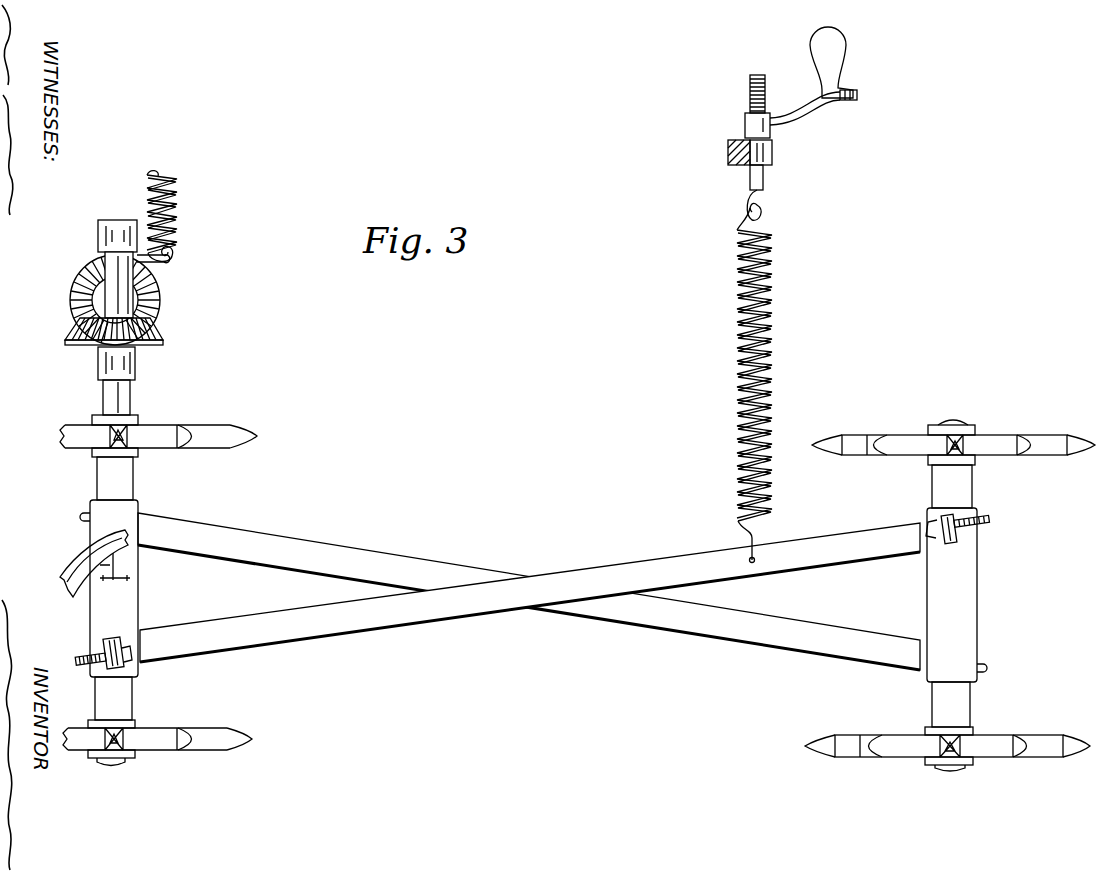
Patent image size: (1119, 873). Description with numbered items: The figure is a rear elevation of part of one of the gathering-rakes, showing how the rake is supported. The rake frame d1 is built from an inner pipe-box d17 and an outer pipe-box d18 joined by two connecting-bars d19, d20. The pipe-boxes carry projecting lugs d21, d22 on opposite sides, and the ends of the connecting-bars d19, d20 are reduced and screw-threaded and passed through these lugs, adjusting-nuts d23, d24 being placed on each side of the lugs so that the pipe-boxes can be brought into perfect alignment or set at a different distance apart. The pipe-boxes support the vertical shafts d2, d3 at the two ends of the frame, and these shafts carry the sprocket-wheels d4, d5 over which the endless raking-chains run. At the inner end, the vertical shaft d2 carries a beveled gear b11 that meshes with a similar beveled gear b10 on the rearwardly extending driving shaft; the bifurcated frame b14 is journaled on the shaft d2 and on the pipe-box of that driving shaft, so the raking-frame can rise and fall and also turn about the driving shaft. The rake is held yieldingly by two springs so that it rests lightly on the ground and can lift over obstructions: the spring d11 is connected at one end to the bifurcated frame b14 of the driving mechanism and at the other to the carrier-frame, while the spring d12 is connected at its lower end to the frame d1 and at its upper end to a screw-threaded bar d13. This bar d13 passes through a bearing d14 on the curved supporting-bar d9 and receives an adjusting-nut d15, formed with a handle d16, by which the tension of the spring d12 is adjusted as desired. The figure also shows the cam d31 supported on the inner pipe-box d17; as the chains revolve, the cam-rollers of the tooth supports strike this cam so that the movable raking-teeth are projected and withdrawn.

The spring d11 is at (177, 220).
The beveled gear b10 is at (157, 287).
The beveled gear b11 is at (153, 330).
The bifurcated frame b14 is at (137, 368).
The vertical shaft d2 is at (137, 400).
The sprocket-wheel d4 is at (60, 437).
The pipe-box d17 is at (122, 513).
The cam d31 is at (73, 562).
The projecting lug d21 is at (115, 643).
The adjusting-nut d23 is at (100, 650).
The adjusting-nut d24 is at (128, 662).
The sprocket-wheel d5 is at (205, 743).
The connecting-bar d19 is at (380, 568).
The connecting-bar d20 is at (458, 605).
The frame d1 is at (529, 590).
The vertical shaft d3 is at (952, 420).
The projecting lug d22 is at (953, 517).
The pipe-box d18 is at (962, 590).
The handle d16 is at (828, 52).
The adjusting-nut d15 is at (755, 125).
The curved supporting-bar d9 is at (730, 155).
The bearing d14 is at (768, 152).
The screw-threaded bar d13 is at (765, 183).
The spring d12 is at (772, 318).